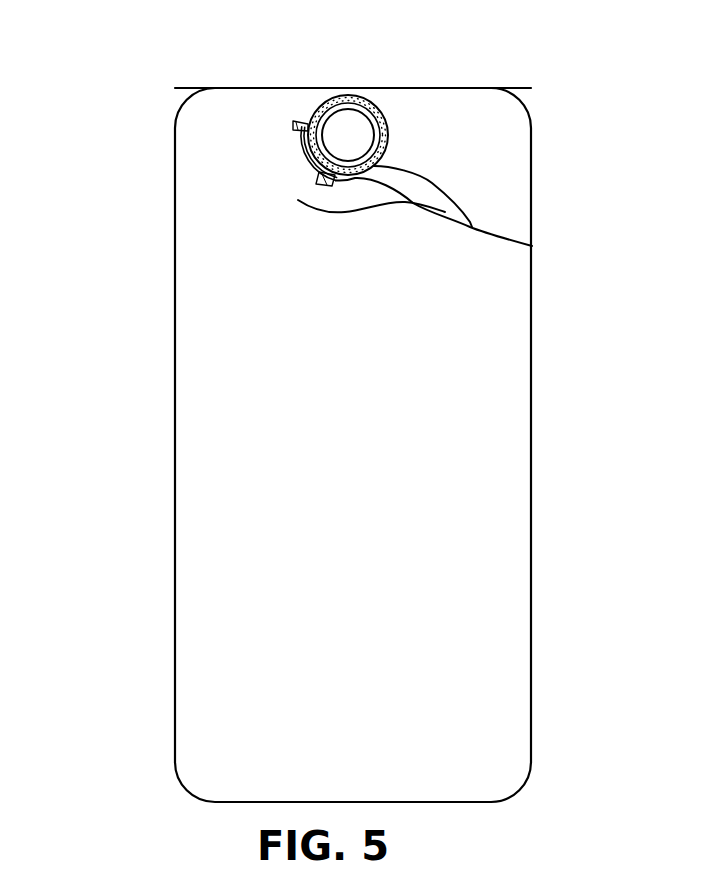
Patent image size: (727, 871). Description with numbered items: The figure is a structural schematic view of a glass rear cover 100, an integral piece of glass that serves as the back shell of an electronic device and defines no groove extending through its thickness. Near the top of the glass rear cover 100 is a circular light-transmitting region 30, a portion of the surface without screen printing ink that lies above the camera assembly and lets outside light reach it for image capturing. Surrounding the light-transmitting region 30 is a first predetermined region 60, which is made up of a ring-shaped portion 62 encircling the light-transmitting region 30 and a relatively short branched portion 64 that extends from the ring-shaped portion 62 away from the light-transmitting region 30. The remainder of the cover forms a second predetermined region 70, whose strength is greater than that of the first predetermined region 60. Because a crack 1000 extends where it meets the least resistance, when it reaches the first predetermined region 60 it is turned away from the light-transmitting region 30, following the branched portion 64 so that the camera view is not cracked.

The glass rear cover 100 is at (250, 46).
The second predetermined region 70 is at (364, 108).
The light-transmitting region 30 is at (363, 138).
The first predetermined region 60 is at (92, 108).
The ring-shaped portion 62 is at (328, 103).
The branched portion 64 is at (302, 127).
The crack 1000 is at (498, 238).